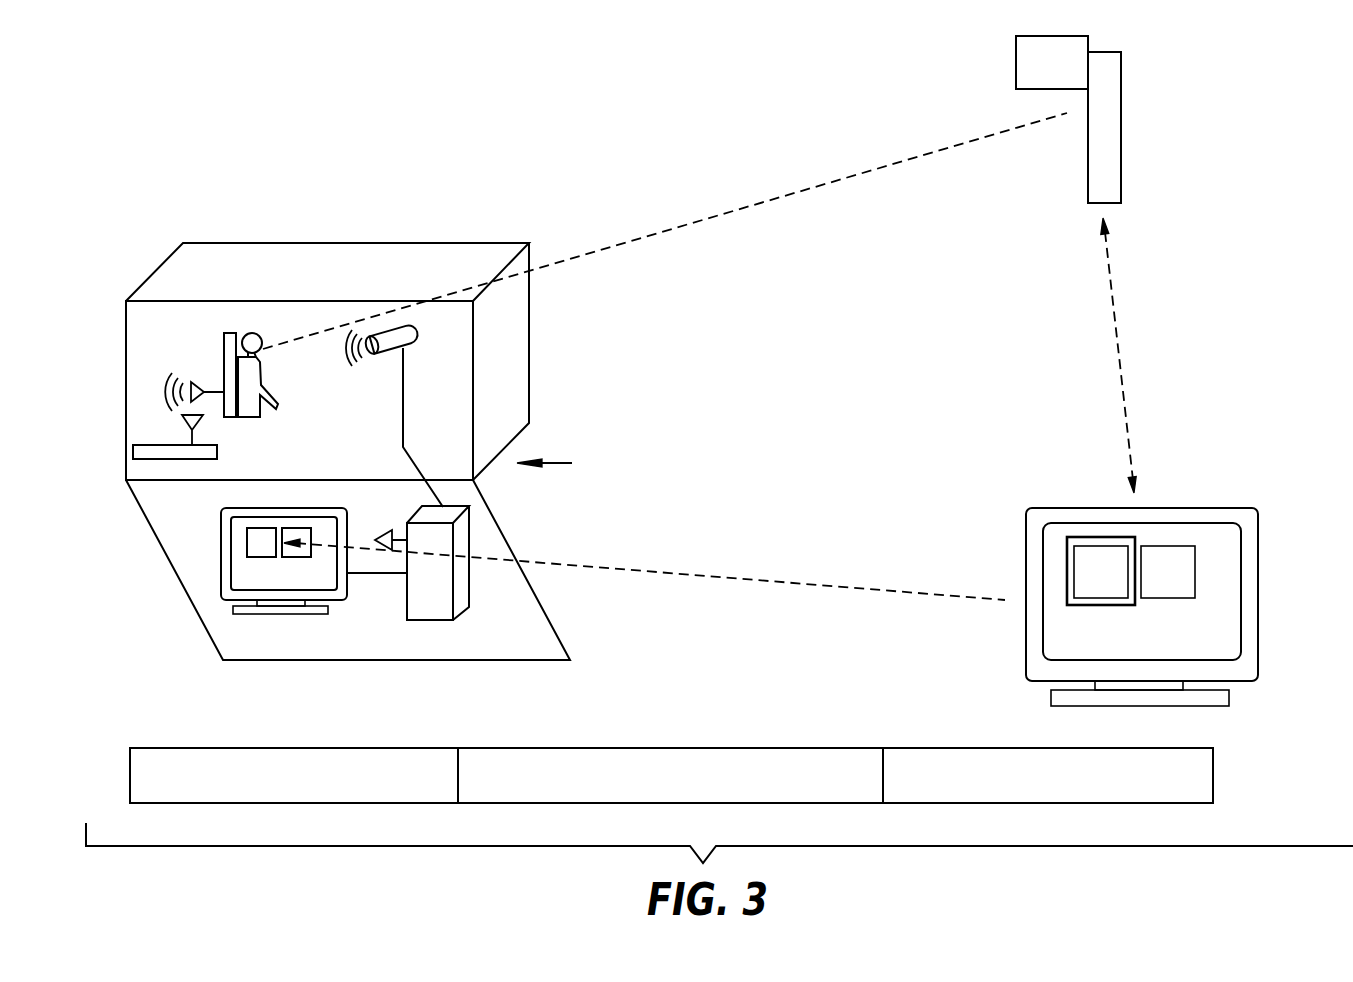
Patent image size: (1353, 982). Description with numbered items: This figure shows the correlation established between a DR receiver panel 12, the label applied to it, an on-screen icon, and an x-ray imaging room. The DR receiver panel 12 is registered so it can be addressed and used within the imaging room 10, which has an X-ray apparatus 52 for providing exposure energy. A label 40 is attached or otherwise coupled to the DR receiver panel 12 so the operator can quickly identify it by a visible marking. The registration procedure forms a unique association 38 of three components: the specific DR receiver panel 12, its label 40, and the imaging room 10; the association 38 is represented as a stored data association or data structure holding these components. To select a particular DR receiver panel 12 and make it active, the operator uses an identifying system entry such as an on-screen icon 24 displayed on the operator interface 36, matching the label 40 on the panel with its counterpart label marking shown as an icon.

The imaging room 10 is at (242, 252).
The DR receiver panel 12 is at (1121, 175).
The on-screen icon 24 is at (1135, 600).
The operator interface 36 is at (1187, 523).
The association 38 is at (242, 748).
The label 40 is at (1016, 62).
The X-ray apparatus 52 is at (565, 463).